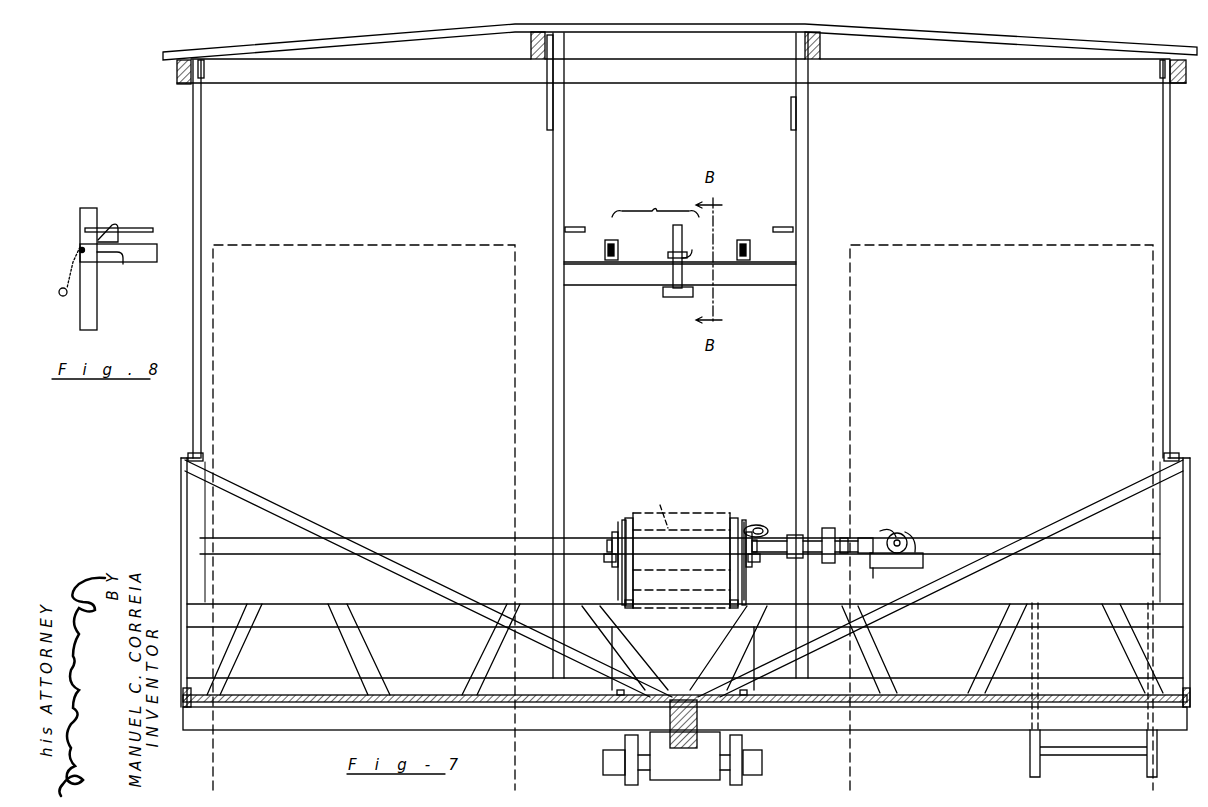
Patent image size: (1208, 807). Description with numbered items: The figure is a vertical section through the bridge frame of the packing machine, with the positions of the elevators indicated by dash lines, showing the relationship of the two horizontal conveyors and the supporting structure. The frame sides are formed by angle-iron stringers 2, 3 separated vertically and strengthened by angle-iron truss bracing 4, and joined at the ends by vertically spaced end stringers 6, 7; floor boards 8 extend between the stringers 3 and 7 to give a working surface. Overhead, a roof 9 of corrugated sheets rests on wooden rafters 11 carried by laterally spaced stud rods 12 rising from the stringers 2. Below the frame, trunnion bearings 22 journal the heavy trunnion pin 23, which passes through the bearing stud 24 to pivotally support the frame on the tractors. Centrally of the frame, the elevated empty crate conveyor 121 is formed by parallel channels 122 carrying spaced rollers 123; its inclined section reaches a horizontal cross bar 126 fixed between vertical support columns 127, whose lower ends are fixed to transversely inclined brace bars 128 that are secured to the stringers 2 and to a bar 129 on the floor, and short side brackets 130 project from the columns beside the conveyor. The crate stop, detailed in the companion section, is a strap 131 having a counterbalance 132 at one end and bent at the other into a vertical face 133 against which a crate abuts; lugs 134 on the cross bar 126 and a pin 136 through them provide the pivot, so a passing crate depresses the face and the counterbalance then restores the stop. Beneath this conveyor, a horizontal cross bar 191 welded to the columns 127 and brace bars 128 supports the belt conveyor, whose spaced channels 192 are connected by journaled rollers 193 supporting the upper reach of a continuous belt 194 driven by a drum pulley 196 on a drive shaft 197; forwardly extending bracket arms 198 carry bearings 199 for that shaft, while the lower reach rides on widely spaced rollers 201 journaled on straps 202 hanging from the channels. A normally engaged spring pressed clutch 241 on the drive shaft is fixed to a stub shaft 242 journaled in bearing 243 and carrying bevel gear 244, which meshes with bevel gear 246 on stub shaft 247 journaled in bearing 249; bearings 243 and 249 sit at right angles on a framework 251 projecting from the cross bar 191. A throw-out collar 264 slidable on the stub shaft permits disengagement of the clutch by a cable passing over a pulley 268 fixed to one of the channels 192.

In FIG. 7, the angle-iron stringer 2 is at (185, 460).
In FIG. 7, the angle-iron stringer 3 is at (183, 699).
In FIG. 7, the angle-iron truss bracing 4 is at (205, 572).
In FIG. 7, the end stringer 6 is at (290, 604).
In FIG. 7, the end stringer 7 is at (320, 682).
In FIG. 7, the floor boards 8 is at (434, 694).
In FIG. 7, the roof 9 is at (244, 48).
In FIG. 7, the wooden rafters 11 is at (174, 72).
In FIG. 7, the stud rods 12 is at (201, 179).
In FIG. 7, the trunnion bearings 22 is at (624, 741).
In FIG. 7, the trunnion pin 23 is at (603, 767).
In FIG. 7, the bearing stud 24 is at (685, 740).
In FIG. 7, the empty crate conveyor 121 is at (655, 203).
In FIG. 7, the parallel channels 122 is at (618, 242).
In FIG. 7, the rollers 123 is at (606, 249).
In FIG. 7, the horizontal cross bar 126 is at (618, 284).
In FIG. 7, the support columns 127 is at (553, 397).
In FIG. 7, the brace bars 128 is at (304, 510).
In FIG. 7, the bar 129 is at (687, 684).
In FIG. 7, the side bracket 130 is at (586, 229).
In FIG. 7, the strap 131 is at (673, 239).
In FIG. 8, the strap 131 is at (110, 223).
In FIG. 7, the counterbalance 132 is at (678, 297).
In FIG. 8, the counterbalance 132 is at (63, 297).
In FIG. 8, the vertical face 133 is at (132, 229).
In FIG. 7, the lugs 134 is at (668, 256).
In FIG. 8, the lugs 134 is at (116, 272).
In FIG. 7, the pin 136 is at (694, 252).
In FIG. 8, the pin 136 is at (78, 248).
In FIG. 7, the horizontal cross bar 191 is at (483, 537).
In FIG. 7, the channels 192 is at (623, 518).
In FIG. 7, the rollers 193 is at (656, 506).
In FIG. 7, the continuous belt 194 is at (700, 513).
In FIG. 7, the drum pulley 196 is at (634, 546).
In FIG. 7, the drive shaft 197 is at (767, 536).
In FIG. 7, the bracket arms 198 is at (606, 564).
In FIG. 7, the bearings 199 is at (608, 546).
In FIG. 7, the rollers 201 is at (680, 613).
In FIG. 7, the straps 202 is at (622, 582).
In FIG. 7, the clutch 241 is at (802, 534).
In FIG. 7, the stub shaft 242 is at (847, 555).
In FIG. 7, the bearing 243 is at (862, 538).
In FIG. 7, the bevel gear 244 is at (886, 529).
In FIG. 7, the bevel gear 246 is at (898, 534).
In FIG. 7, the stub shaft 247 is at (911, 532).
In FIG. 7, the bearing 249 is at (896, 560).
In FIG. 7, the framework 251 is at (891, 570).
In FIG. 7, the throw-out collar 264 is at (832, 533).
In FIG. 7, the pulley 268 is at (758, 525).